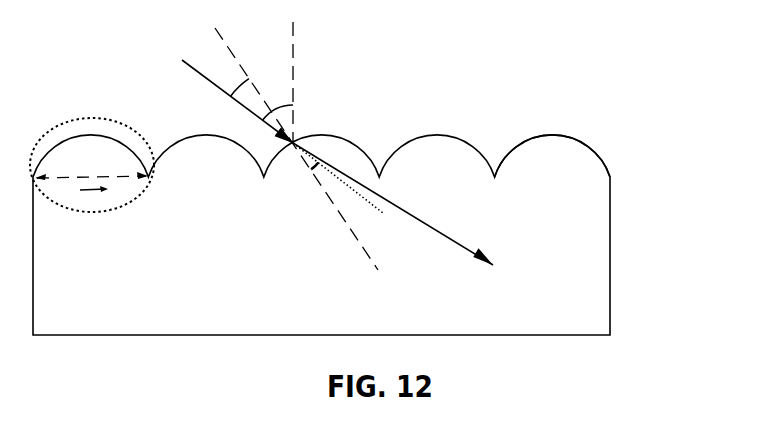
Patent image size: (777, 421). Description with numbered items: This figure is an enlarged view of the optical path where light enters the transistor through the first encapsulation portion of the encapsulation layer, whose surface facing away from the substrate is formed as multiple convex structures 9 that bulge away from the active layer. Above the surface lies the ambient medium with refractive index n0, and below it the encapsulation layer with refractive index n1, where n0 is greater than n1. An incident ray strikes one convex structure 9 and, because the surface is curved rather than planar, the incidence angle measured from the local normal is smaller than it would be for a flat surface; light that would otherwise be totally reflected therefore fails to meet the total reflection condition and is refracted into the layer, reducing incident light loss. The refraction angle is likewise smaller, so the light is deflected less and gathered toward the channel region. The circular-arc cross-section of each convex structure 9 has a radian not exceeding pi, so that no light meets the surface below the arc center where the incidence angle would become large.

The convex structure 9 is at (72, 118).
The refractive index of the ambient medium n0 is at (556, 141).
The refractive index of the encapsulation layer n1 is at (579, 174).